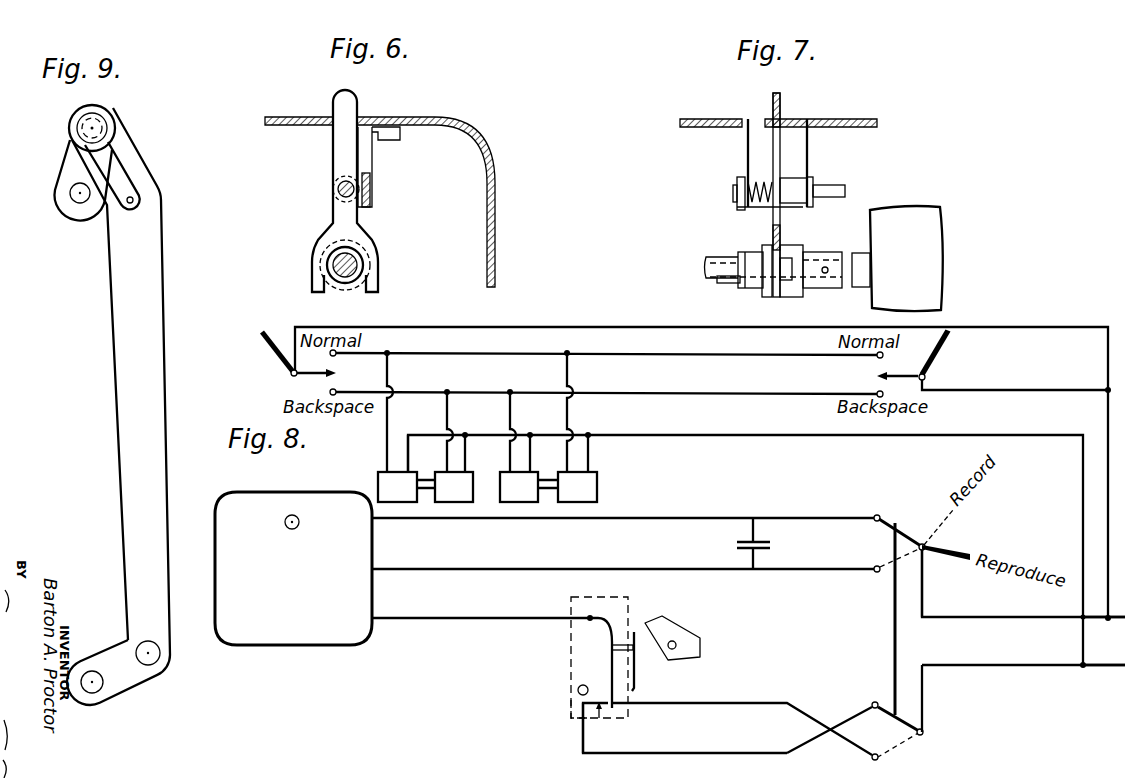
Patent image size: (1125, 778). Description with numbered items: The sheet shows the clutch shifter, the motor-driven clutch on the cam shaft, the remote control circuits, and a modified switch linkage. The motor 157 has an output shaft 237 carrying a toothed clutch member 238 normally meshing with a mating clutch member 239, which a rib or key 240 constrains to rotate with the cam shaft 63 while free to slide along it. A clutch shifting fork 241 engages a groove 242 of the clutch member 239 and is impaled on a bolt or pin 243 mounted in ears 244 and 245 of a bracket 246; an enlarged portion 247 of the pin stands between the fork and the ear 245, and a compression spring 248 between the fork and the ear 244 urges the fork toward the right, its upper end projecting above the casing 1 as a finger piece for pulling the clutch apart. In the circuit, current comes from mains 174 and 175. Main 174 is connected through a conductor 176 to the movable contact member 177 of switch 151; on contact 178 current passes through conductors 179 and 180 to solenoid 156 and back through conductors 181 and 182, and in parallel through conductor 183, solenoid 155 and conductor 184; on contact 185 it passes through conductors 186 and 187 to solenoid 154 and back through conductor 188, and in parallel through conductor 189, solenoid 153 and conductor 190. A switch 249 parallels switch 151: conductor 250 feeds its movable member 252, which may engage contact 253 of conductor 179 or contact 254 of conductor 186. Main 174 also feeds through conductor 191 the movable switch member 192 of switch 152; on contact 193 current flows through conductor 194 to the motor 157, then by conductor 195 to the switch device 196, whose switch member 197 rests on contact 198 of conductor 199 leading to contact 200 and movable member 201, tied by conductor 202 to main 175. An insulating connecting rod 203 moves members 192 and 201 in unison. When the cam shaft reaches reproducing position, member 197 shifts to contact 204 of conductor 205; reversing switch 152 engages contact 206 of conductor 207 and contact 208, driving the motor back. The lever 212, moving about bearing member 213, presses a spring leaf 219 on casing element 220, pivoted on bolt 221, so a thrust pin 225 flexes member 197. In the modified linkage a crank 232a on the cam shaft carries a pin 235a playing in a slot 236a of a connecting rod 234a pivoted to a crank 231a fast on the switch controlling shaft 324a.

In FIG. 6, the housing 1 is at (496, 212).
In FIG. 6, the cam shaft 63 is at (352, 262).
In FIG. 7, the cam shaft 63 is at (722, 263).
In FIG. 8, the switch 151 is at (947, 345).
In FIG. 8, the switch 152 is at (942, 541).
In FIG. 8, the solenoid 153 is at (445, 487).
In FIG. 8, the solenoid 154 is at (519, 487).
In FIG. 8, the solenoid 155 is at (397, 487).
In FIG. 8, the solenoid 156 is at (567, 487).
In FIG. 7, the motor 157 is at (908, 212).
In FIG. 8, the motor 157 is at (297, 637).
In FIG. 8, the conductor main 174 is at (1118, 622).
In FIG. 8, the conductor main 175 is at (1086, 668).
In FIG. 8, the conductor 176 is at (1032, 392).
In FIG. 8, the movable contact member 177 is at (912, 366).
In FIG. 8, the contact 178 is at (877, 357).
In FIG. 8, the conductor 179 is at (682, 353).
In FIG. 8, the conductor 180 is at (568, 410).
In FIG. 8, the conductor 181 is at (589, 452).
In FIG. 8, the conductor 182 is at (690, 433).
In FIG. 8, the conductor 183 is at (386, 436).
In FIG. 8, the conductor 184 is at (408, 448).
In FIG. 8, the contact 185 is at (877, 393).
In FIG. 8, the conductor 186 is at (700, 392).
In FIG. 8, the conductor 187 is at (511, 410).
In FIG. 8, the conductor 188 is at (531, 452).
In FIG. 8, the conductor 189 is at (448, 410).
In FIG. 8, the conductor 190 is at (466, 452).
In FIG. 8, the conductor 191 is at (924, 593).
In FIG. 8, the movable switch member 192 is at (903, 533).
In FIG. 8, the contact 193 is at (875, 515).
In FIG. 8, the conductor 194 is at (712, 518).
In FIG. 8, the conductor 195 is at (498, 618).
In FIG. 8, the switch device 196 is at (566, 635).
In FIG. 8, the switch member 197 is at (611, 668).
In FIG. 8, the contact 198 is at (605, 728).
In FIG. 8, the conductor 199 is at (582, 742).
In FIG. 8, the contact 200 is at (871, 703).
In FIG. 8, the movable switch member 201 is at (897, 724).
In FIG. 8, the conductor 202 is at (938, 668).
In FIG. 8, the insulating connecting rod 203 is at (893, 631).
In FIG. 8, the contact 204 is at (613, 704).
In FIG. 8, the conductor 205 is at (720, 690).
In FIG. 8, the contact 206 is at (875, 574).
In FIG. 8, the conductor 207 is at (805, 569).
In FIG. 8, the contact 208 is at (871, 760).
In FIG. 8, the lever 212 is at (655, 625).
In FIG. 8, the bearing member 213 is at (676, 642).
In FIG. 8, the spring leaf 219 is at (638, 660).
In FIG. 8, the casing element 220 is at (570, 708).
In FIG. 8, the bolt 221 is at (578, 690).
In FIG. 8, the thrust pin 225 is at (622, 645).
In FIG. 9, the crank 231a is at (124, 686).
In FIG. 9, the crank 232a is at (67, 163).
In FIG. 9, the connecting rod 234a is at (117, 312).
In FIG. 9, the pin 235a is at (91, 120).
In FIG. 9, the slot 236a is at (121, 163).
In FIG. 7, the motor output shaft 237 is at (855, 253).
In FIG. 8, the motor output shaft 237 is at (300, 522).
In FIG. 7, the toothed clutch member 238 is at (797, 247).
In FIG. 6, the clutch member 239 is at (348, 285).
In FIG. 7, the clutch member 239 is at (778, 293).
In FIG. 6, the rib or key 240 is at (342, 280).
In FIG. 7, the rib or key 240 is at (728, 286).
In FIG. 6, the clutch shifting fork 241 is at (340, 147).
In FIG. 7, the clutch shifting fork 241 is at (774, 150).
In FIG. 7, the groove 242 is at (774, 260).
In FIG. 6, the bolt or pin 243 is at (336, 194).
In FIG. 7, the bolt or pin 243 is at (830, 195).
In FIG. 6, the ear 244 is at (336, 186).
In FIG. 7, the ear 244 is at (737, 203).
In FIG. 7, the ear 245 is at (814, 183).
In FIG. 6, the bracket 246 is at (373, 197).
In FIG. 7, the bracket 246 is at (762, 135).
In FIG. 7, the enlarged portion 247 is at (795, 182).
In FIG. 7, the compression spring 248 is at (760, 180).
In FIG. 8, the switch 249 is at (273, 359).
In FIG. 8, the conductor 250 is at (553, 327).
In FIG. 8, the movable switch member 252 is at (312, 375).
In FIG. 8, the contact 253 is at (337, 355).
In FIG. 8, the contact 254 is at (340, 391).
In FIG. 9, the switch controlling shaft 324a is at (90, 671).